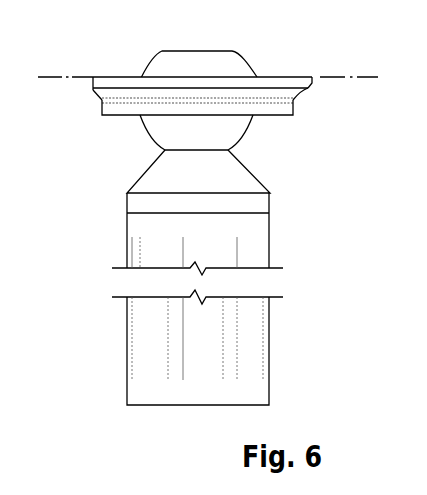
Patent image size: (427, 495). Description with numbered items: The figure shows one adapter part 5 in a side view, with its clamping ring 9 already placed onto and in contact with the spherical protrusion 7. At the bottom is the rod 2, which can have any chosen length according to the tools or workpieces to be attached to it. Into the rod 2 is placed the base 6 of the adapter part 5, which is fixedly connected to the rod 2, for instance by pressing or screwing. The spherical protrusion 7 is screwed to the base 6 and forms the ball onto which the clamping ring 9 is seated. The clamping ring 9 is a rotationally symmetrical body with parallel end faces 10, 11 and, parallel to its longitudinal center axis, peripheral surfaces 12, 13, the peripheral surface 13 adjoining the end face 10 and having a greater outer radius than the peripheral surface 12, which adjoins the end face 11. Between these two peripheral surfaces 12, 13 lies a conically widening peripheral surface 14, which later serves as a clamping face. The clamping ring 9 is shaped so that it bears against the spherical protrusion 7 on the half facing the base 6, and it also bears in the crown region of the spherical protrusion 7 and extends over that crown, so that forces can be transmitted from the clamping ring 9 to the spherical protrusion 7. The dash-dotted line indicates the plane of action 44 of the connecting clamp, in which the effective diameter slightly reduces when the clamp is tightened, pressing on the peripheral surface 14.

The rod 2 is at (256, 250).
The adapter part 5 is at (80, 171).
The base 6 is at (151, 183).
The spherical protrusion 7 is at (193, 62).
The clamping ring 9 is at (335, 88).
The end face 10 is at (261, 76).
The end face 11 is at (271, 118).
The peripheral surface 12 is at (293, 108).
The peripheral surface 13 is at (317, 77).
The conically widening peripheral surface 14 is at (96, 97).
The plane of action 44 is at (46, 76).